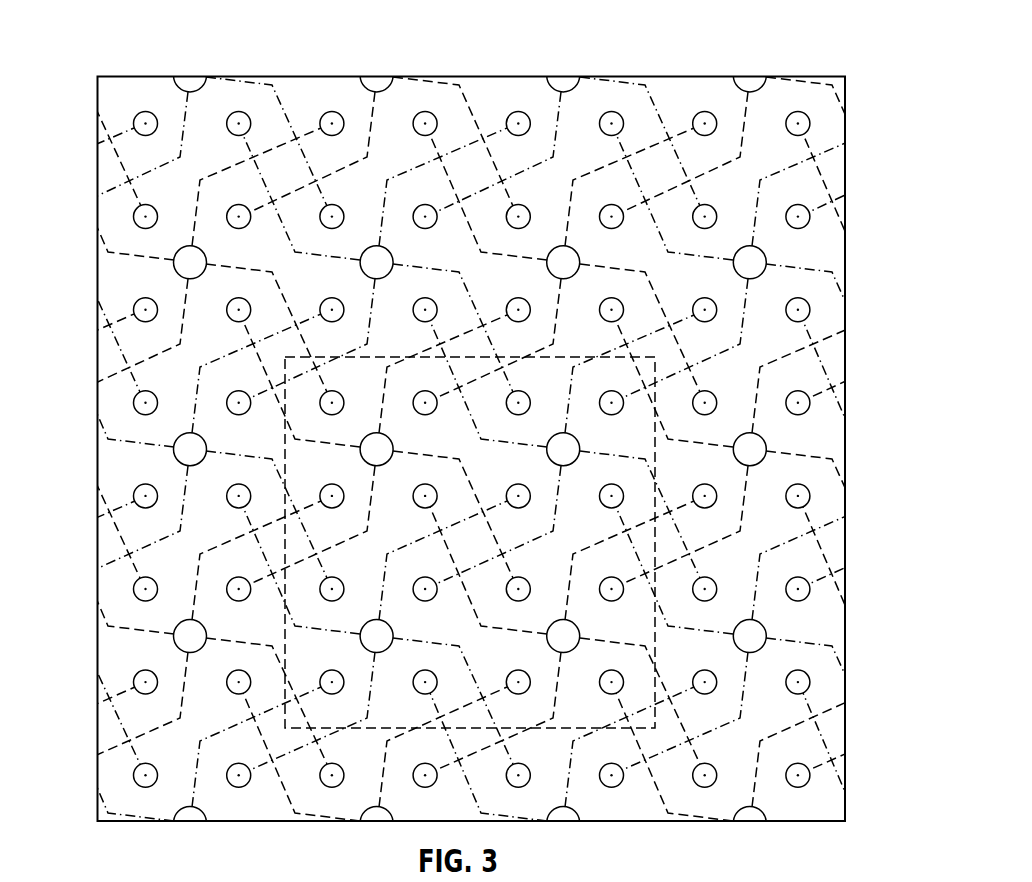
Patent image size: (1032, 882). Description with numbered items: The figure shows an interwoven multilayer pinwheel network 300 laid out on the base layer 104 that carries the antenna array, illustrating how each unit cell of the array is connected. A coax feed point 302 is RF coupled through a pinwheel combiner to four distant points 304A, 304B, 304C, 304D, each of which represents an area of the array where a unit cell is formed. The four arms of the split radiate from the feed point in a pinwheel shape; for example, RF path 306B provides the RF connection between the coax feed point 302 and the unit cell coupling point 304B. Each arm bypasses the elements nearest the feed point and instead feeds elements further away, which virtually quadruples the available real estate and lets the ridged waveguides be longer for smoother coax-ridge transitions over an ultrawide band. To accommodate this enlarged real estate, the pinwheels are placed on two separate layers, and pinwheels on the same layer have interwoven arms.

The interwoven multilayer pinwheel network 300 is at (105, 45).
The base layer 104 is at (845, 127).
The coax feed point 302 is at (380, 246).
The distant point 304A is at (227, 402).
The distant point 304B is at (239, 111).
The distant point 304C is at (612, 111).
The distant point 304D is at (530, 402).
The RF path 306B is at (252, 190).